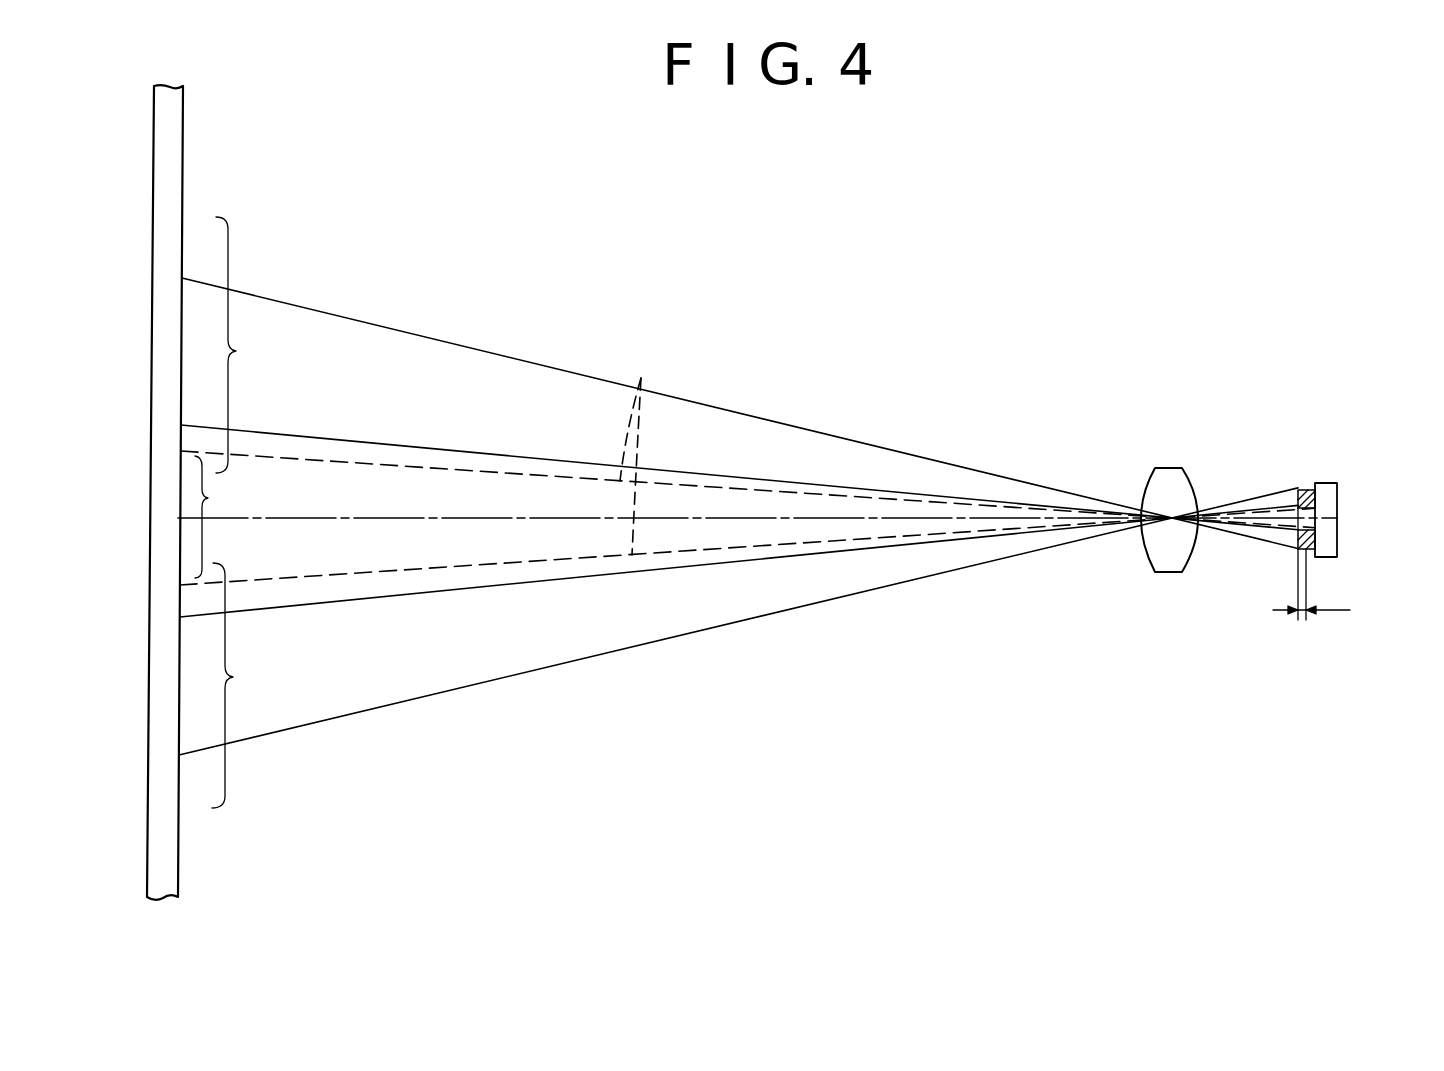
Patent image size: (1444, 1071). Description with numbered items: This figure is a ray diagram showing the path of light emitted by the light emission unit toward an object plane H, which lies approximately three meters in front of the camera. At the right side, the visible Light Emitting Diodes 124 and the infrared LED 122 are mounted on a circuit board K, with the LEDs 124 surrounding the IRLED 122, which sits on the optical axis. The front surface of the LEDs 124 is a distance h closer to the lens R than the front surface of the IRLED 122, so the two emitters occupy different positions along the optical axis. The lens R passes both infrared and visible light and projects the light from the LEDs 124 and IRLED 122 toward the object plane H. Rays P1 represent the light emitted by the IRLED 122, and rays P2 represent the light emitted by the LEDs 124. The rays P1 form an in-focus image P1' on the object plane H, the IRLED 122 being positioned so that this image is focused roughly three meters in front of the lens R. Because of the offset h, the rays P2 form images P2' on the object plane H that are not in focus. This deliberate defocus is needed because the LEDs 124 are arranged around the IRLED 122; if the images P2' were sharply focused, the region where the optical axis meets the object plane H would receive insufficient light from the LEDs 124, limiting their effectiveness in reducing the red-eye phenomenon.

The object plane H is at (170, 125).
The images formed by rays P2 P2' is at (247, 512).
The in-focus image formed by rays P1 P1' is at (223, 517).
The rays of light emitted by IRLED P1 is at (642, 447).
The rays of light emitted by LEDs P2 is at (791, 531).
The lens R is at (1170, 478).
The Light Emitting Diodes 124 is at (1300, 490).
The infrared LED 122 is at (1337, 516).
The circuit board K is at (1333, 492).
The distance h is at (1311, 584).